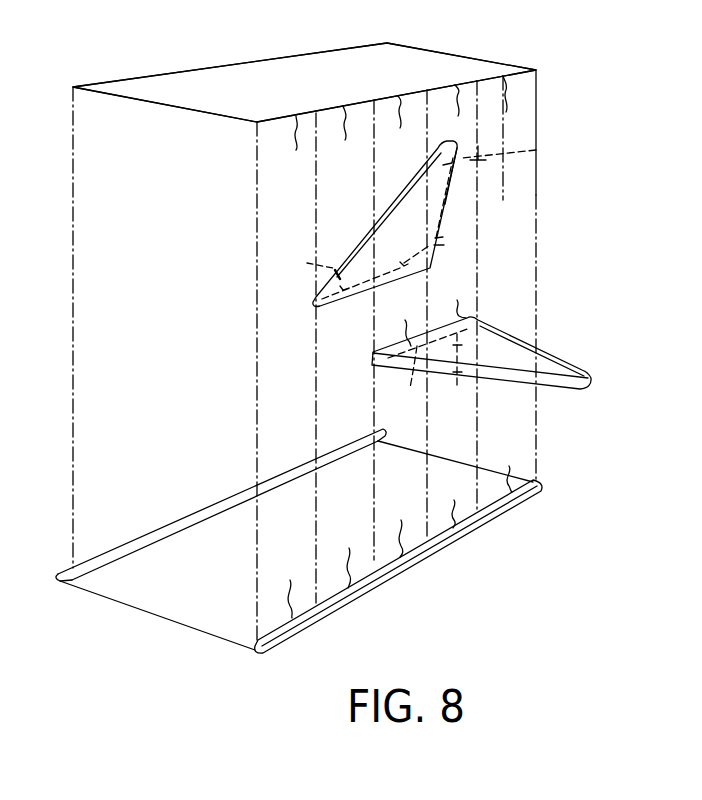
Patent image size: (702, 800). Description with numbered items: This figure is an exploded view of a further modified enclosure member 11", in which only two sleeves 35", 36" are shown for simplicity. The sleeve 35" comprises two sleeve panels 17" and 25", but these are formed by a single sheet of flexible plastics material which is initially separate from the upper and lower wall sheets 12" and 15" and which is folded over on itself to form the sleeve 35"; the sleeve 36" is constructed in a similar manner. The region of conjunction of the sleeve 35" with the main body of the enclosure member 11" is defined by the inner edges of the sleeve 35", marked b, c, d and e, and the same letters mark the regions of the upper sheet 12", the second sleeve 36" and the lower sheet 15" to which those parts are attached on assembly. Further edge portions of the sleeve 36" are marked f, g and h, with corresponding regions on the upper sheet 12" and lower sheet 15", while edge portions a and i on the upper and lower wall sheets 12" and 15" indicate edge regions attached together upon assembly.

The enclosure member 11 is at (173, 56).
The upper wall sheet 12 is at (429, 72).
The lower wall sheet 15 is at (176, 638).
The sleeve panel 17 is at (568, 136).
The sleeve panel 25 is at (440, 203).
The sleeve 35 is at (362, 167).
The sleeve 36 is at (614, 294).